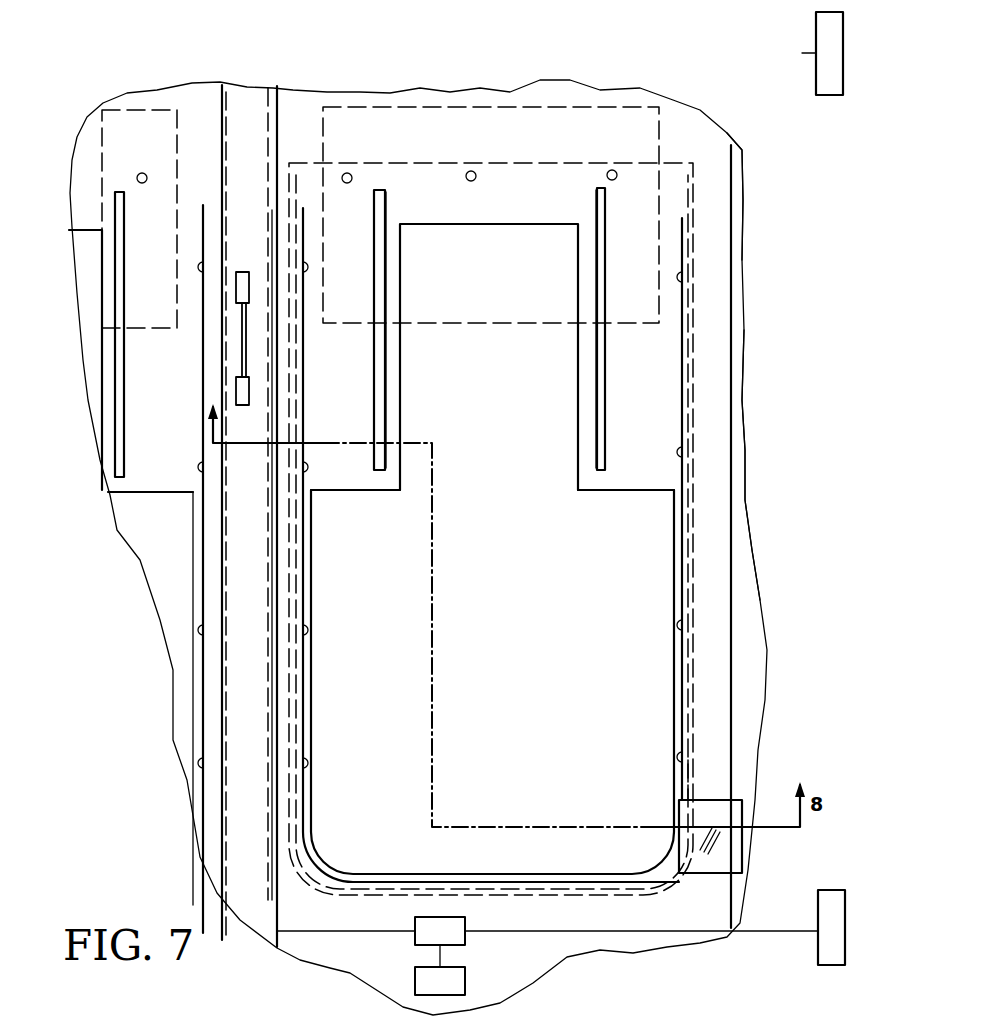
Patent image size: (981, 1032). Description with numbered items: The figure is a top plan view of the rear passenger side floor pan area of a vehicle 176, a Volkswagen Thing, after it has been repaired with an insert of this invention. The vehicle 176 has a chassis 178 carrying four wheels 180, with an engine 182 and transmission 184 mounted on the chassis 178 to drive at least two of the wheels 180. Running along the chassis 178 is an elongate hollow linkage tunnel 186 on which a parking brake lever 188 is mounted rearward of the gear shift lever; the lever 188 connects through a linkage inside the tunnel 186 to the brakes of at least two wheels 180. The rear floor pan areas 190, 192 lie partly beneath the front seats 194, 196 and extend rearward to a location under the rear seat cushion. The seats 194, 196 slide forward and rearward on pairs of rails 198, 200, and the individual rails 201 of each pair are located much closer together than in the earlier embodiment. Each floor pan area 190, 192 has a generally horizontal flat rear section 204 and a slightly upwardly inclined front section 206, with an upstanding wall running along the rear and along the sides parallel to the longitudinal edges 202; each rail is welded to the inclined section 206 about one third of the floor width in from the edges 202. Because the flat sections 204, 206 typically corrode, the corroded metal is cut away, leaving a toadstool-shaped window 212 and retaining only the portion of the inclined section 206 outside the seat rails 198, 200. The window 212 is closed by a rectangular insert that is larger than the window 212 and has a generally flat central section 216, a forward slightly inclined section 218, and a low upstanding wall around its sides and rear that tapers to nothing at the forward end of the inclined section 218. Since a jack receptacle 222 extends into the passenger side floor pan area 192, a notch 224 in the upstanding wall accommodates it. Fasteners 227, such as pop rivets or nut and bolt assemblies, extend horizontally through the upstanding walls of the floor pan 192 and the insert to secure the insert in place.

The vehicle 176 is at (762, 149).
The chassis 178 is at (750, 492).
The wheels 180 is at (843, 82).
The engine 182 is at (458, 992).
The transmission 184 is at (458, 942).
The linkage tunnel 186 is at (267, 234).
The parking brake lever 188 is at (242, 350).
The rear floor pan area 190 is at (97, 510).
The rear floor pan area 192 is at (656, 433).
The front seat 194 is at (158, 112).
The front seat 196 is at (413, 163).
The rails 198 is at (123, 262).
The rails 200 is at (611, 375).
The rails 201 is at (597, 248).
The longitudinal edges 202 is at (278, 765).
The rear section 204 is at (677, 733).
The front section 206 is at (360, 426).
The window 212 is at (386, 354).
The central section 216 is at (505, 784).
The inclined section 218 is at (495, 436).
The jack receptacle 222 is at (727, 853).
The notch 224 is at (690, 795).
The fasteners 227 is at (472, 182).